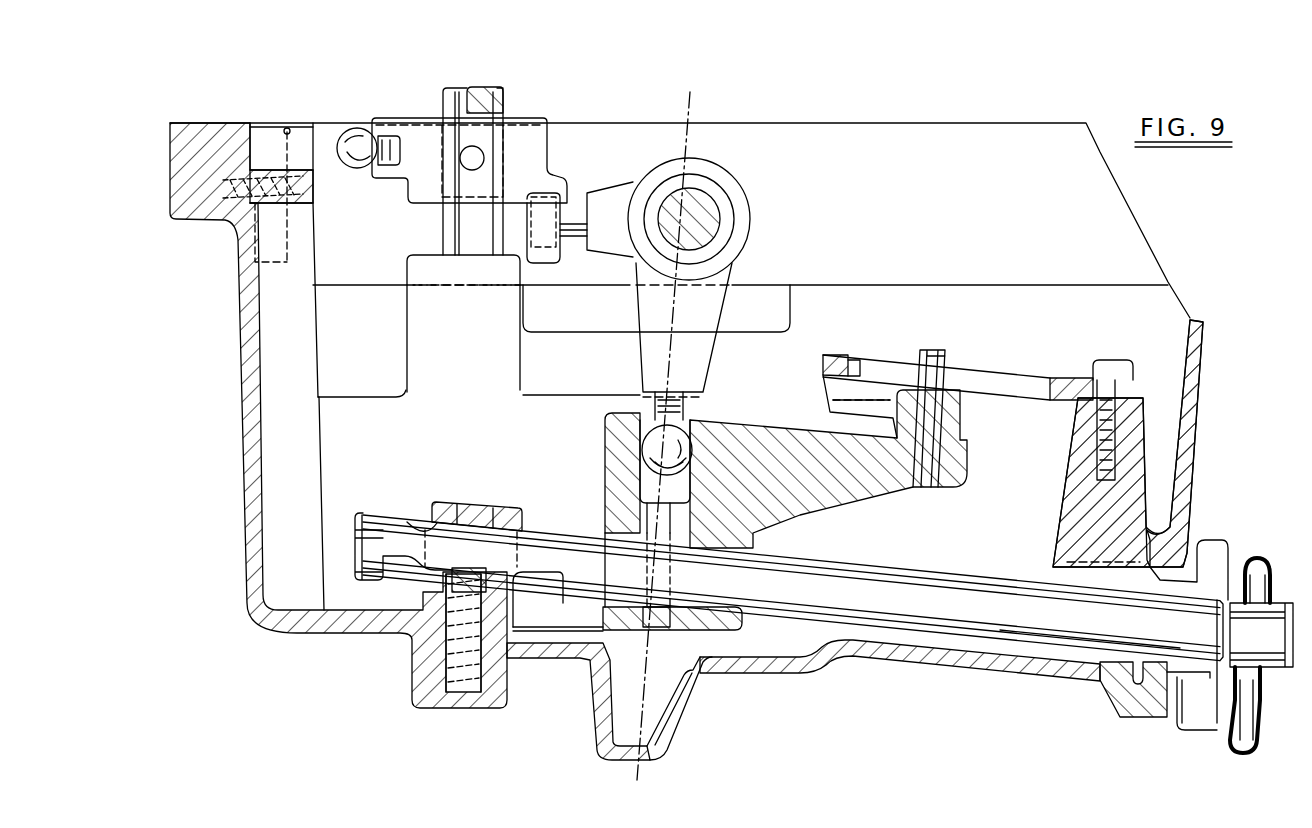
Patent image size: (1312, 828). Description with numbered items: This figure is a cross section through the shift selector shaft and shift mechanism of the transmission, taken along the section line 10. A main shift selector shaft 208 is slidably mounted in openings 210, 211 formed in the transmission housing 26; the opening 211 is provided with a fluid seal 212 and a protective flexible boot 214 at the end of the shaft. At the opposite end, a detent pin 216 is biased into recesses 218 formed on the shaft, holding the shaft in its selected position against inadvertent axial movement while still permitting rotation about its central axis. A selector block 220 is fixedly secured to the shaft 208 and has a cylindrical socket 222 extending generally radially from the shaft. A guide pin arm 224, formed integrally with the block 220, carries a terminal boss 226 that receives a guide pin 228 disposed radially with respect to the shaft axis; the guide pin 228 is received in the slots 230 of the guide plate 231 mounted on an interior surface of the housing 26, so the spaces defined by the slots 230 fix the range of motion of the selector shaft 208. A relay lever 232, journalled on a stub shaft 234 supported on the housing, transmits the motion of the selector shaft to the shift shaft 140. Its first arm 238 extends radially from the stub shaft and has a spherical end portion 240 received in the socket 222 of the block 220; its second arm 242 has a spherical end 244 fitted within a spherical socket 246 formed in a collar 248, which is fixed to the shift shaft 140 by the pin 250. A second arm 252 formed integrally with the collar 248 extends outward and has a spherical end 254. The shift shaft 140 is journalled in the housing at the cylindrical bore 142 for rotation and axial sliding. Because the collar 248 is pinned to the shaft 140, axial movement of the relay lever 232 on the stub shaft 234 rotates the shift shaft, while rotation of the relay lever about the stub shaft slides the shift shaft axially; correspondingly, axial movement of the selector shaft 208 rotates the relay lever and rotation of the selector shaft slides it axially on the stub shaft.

The section line 10 is at (688, 102).
The transmission housing 26 is at (1200, 403).
The shift shaft 140 is at (500, 108).
The cylindrical bore 142 is at (440, 230).
The main shift selector shaft 208 is at (965, 637).
The opening 210 is at (403, 533).
The opening 211 is at (1087, 643).
The fluid seal 212 is at (1193, 537).
The protective flexible boot 214 is at (1200, 730).
The detent pin 216 is at (450, 652).
The recess 218 is at (443, 587).
The selector block 220 is at (730, 633).
The cylindrical socket 222 is at (640, 480).
The guide pin arm 224 is at (830, 505).
The terminal boss 226 is at (960, 418).
The guide pin 228 is at (946, 355).
The slot 230 is at (1045, 380).
The guide plate 231 is at (1073, 378).
The relay lever 232 is at (723, 181).
The stub shaft 234 is at (703, 208).
The first arm 238 is at (703, 360).
The spherical end portion 240 is at (660, 452).
The second arm 242 is at (600, 199).
The spherical end 244 is at (523, 223).
The spherical socket 246 is at (543, 262).
The collar 248 is at (540, 158).
The pin 250 is at (467, 162).
The second arm 252 is at (430, 102).
The spherical end 254 is at (358, 131).